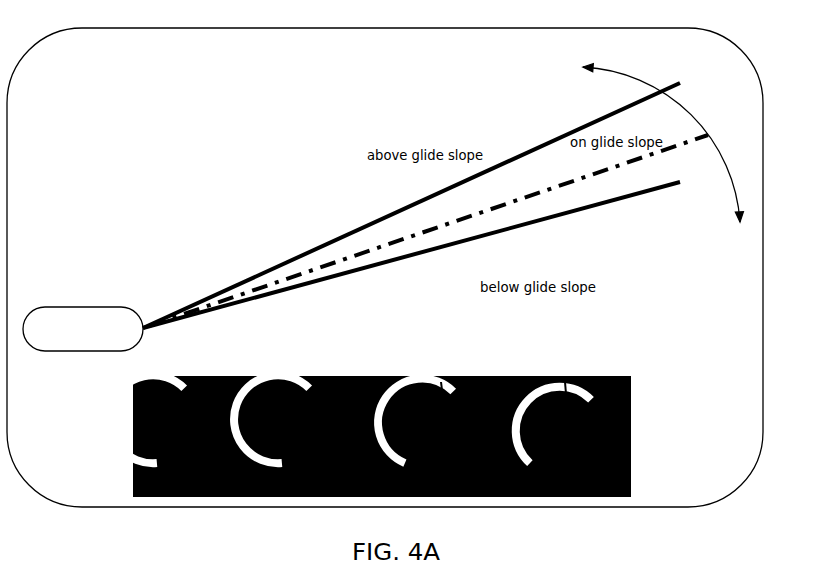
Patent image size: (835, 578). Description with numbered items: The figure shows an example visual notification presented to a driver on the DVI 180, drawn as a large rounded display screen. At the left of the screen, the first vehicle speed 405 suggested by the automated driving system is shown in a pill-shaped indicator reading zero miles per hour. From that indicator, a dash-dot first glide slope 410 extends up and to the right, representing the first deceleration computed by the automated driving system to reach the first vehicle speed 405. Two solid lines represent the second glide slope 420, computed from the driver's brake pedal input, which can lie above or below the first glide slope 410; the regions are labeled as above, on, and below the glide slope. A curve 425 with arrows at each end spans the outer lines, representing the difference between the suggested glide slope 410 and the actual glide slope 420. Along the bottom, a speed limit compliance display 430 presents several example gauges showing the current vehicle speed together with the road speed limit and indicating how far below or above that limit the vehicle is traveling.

The DVI 180 is at (740, 48).
The first vehicle speed 405 is at (92, 307).
The first glide slope 410 is at (675, 145).
The second glide slope 420 is at (318, 248).
The curve 425 is at (687, 103).
The speed limit compliance display 430 is at (407, 377).